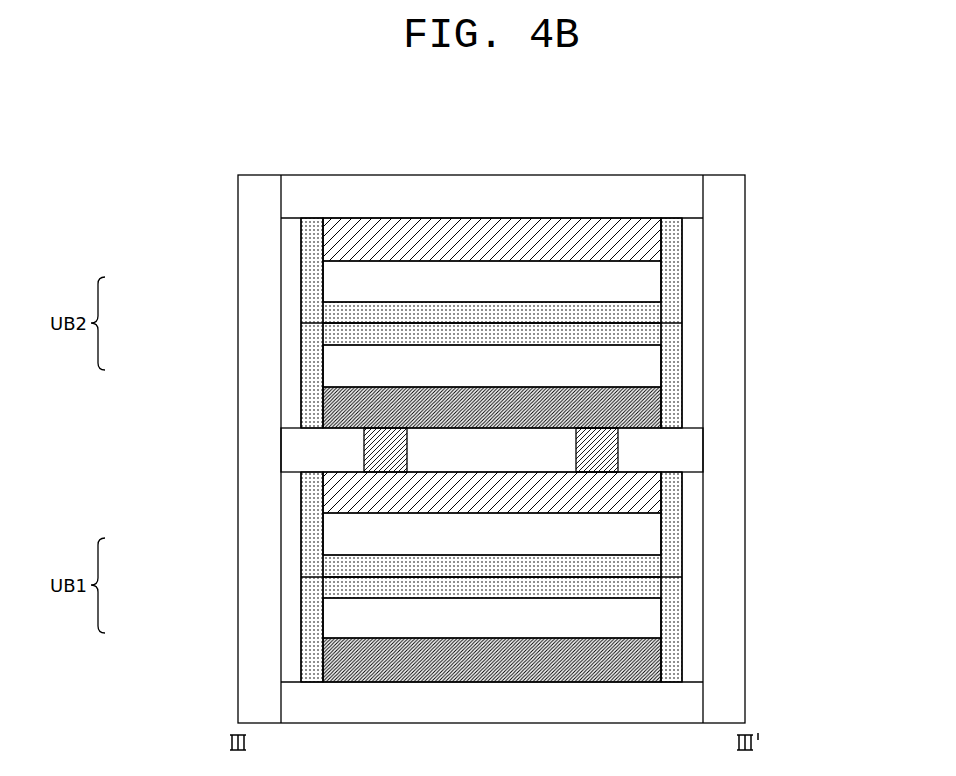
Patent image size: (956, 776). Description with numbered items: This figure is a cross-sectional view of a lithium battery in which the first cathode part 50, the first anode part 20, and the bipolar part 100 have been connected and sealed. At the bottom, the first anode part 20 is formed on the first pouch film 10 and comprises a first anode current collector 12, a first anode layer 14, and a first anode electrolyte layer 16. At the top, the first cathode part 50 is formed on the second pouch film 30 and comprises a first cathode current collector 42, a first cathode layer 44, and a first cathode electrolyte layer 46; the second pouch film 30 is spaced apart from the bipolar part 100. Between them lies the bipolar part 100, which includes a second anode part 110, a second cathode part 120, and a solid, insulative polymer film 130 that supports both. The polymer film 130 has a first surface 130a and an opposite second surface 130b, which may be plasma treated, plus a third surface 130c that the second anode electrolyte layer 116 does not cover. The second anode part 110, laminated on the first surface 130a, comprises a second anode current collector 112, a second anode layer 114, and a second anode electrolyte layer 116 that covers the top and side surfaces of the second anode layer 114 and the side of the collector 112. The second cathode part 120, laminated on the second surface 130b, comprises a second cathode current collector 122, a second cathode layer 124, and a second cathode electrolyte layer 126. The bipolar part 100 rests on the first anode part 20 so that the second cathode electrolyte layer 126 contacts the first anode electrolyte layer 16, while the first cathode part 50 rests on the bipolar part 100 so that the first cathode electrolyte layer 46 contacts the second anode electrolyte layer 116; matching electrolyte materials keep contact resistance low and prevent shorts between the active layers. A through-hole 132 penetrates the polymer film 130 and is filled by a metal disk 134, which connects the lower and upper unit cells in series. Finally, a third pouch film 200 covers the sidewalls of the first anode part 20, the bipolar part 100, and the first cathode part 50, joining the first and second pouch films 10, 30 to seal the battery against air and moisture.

The first pouch film 10 is at (293, 707).
The first anode current collector 12 is at (333, 655).
The first anode layer 14 is at (333, 620).
The first anode electrolyte layer 16 is at (303, 590).
The first anode part 20 is at (165, 585).
The second pouch film 30 is at (295, 198).
The first cathode current collector 42 is at (333, 242).
The first cathode layer 44 is at (333, 272).
The first cathode electrolyte layer 46 is at (310, 312).
The first cathode part 50 is at (165, 238).
The bipolar part 100 is at (105, 372).
The second anode part 110 is at (165, 337).
The second anode current collector 112 is at (333, 405).
The second anode layer 114 is at (333, 375).
The second anode electrolyte layer 116 is at (318, 343).
The second cathode part 120 is at (165, 490).
The second cathode current collector 122 is at (333, 497).
The second cathode layer 124 is at (333, 528).
The second cathode electrolyte layer 126 is at (310, 556).
The polymer film 130 is at (295, 448).
The first surface 130a is at (690, 430).
The second surface 130b is at (690, 467).
The third surface 130c is at (703, 452).
The through-hole 132 is at (616, 450).
The disk 134 is at (597, 463).
The third pouch film 200 is at (735, 703).